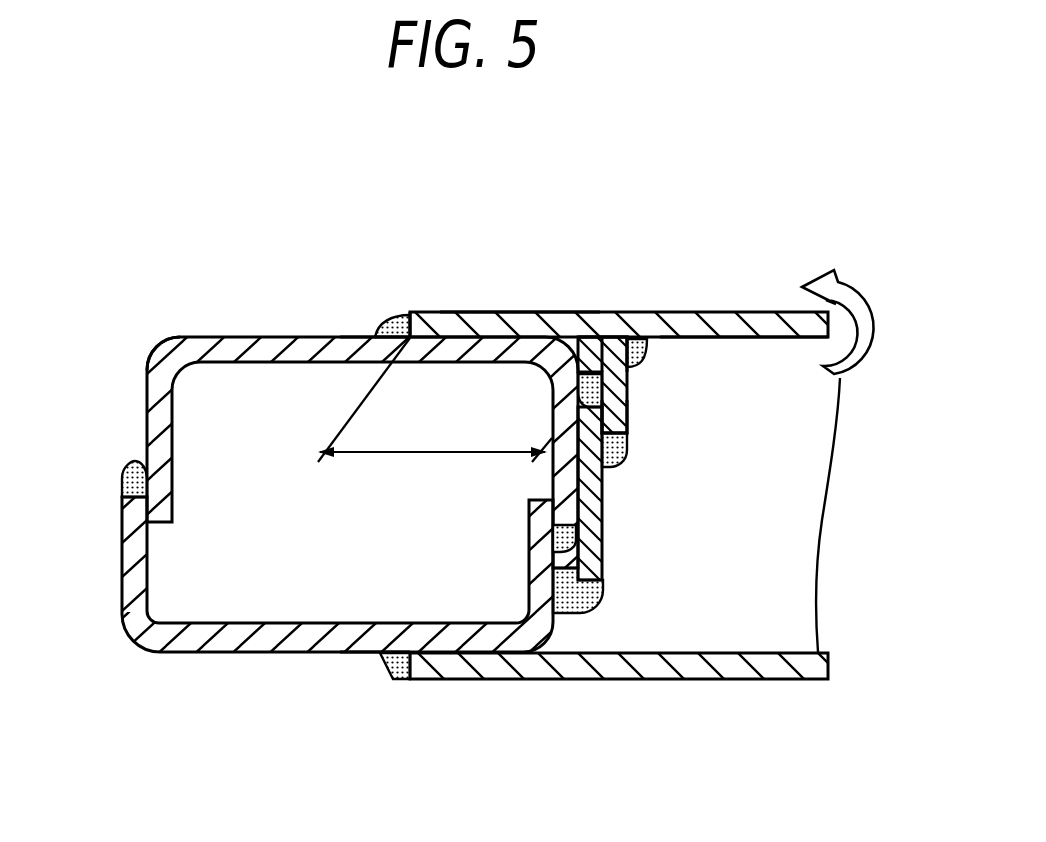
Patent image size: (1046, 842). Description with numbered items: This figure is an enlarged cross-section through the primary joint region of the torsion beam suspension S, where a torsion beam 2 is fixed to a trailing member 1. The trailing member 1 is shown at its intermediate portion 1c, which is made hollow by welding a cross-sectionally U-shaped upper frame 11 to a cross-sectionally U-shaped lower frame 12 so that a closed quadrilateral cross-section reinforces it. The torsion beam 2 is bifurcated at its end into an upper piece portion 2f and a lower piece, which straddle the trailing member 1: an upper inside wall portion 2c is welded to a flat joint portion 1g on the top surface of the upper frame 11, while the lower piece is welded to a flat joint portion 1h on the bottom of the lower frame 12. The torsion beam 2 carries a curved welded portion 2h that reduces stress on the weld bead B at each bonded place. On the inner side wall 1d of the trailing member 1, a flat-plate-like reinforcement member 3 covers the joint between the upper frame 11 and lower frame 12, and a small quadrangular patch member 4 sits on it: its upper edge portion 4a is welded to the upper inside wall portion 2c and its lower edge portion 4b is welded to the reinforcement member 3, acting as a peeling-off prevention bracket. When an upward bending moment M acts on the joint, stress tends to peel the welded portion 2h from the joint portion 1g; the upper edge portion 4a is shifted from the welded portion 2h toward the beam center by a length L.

The trailing member 1 is at (329, 485).
The upper frame 11 is at (148, 360).
The lower frame 12 is at (165, 653).
The intermediate portion 1c is at (167, 342).
The flat joint portion 1g is at (373, 332).
The flat joint portion 1h is at (378, 667).
The inner side wall 1d is at (603, 513).
The torsion beam 2 is at (643, 497).
The upper inside wall portion 2c is at (760, 339).
The upper piece portion 2f is at (520, 312).
The welded portion 2h is at (398, 316).
The reinforcement member 3 is at (603, 490).
The patch member 4 is at (733, 386).
The upper edge portion 4a is at (613, 337).
The lower edge portion 4b is at (625, 425).
The weld bead B is at (393, 320).
The torsion beam suspension S is at (228, 220).
The upward bending moment M is at (852, 322).
The length L is at (435, 416).